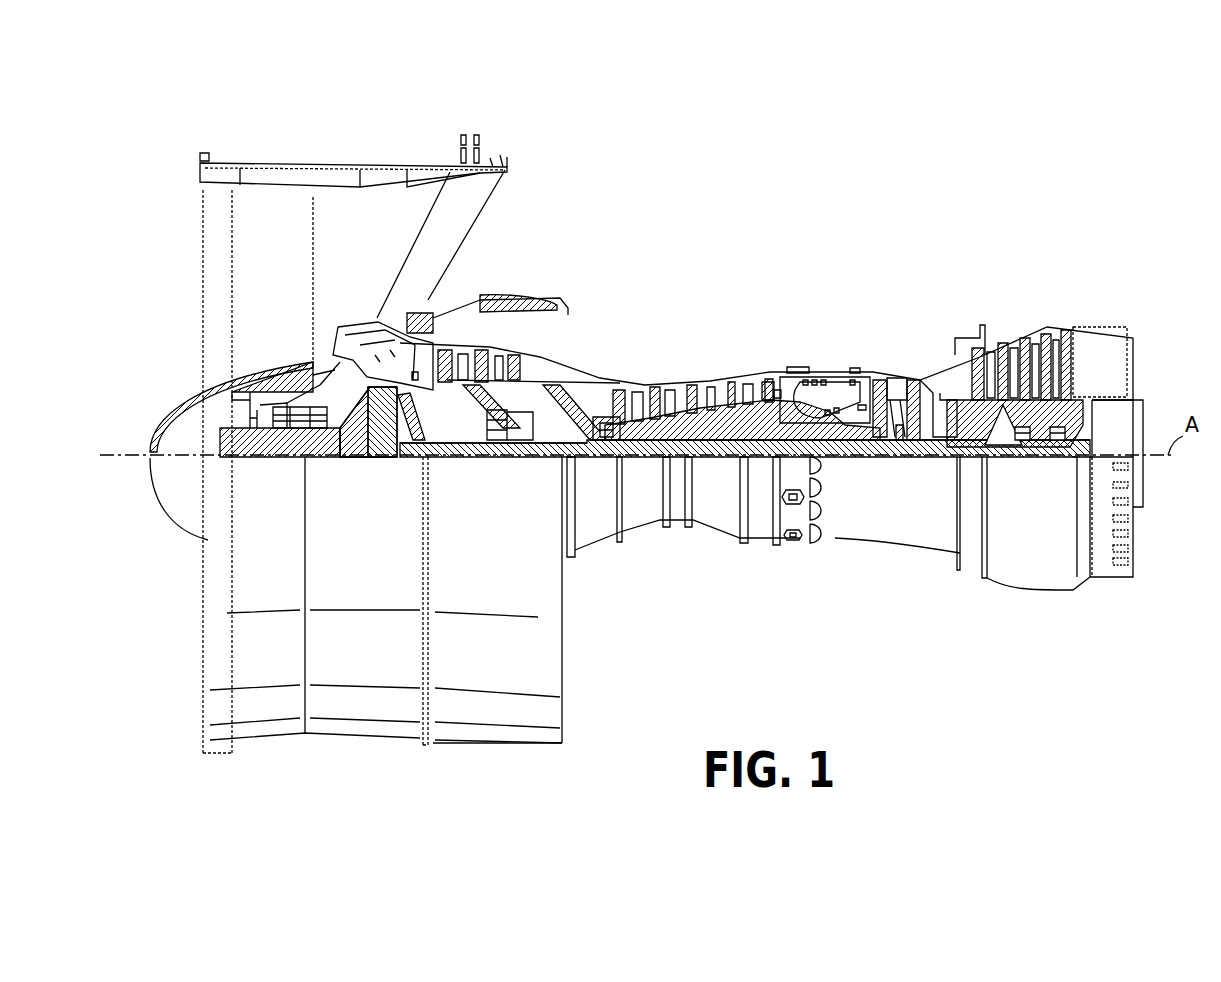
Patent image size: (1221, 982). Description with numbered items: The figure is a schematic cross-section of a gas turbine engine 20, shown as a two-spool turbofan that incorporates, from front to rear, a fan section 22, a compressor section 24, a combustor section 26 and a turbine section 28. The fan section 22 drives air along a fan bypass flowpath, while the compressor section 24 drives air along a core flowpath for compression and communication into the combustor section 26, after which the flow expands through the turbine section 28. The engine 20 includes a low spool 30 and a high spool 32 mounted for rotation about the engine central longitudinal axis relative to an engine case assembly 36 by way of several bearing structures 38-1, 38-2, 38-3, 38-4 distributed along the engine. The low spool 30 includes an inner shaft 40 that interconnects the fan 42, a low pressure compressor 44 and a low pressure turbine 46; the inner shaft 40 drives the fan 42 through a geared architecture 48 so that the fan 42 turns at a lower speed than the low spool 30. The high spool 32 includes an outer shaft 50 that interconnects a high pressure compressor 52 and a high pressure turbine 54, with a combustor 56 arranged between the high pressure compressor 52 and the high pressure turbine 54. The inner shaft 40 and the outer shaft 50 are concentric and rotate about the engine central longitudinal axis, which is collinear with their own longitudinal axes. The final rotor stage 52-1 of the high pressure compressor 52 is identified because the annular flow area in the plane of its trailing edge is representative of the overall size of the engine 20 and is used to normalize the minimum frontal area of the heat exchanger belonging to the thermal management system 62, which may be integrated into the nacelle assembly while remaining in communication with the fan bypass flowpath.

The gas turbine engine 20 is at (905, 212).
The fan section 22 is at (418, 120).
The compressor section 24 is at (433, 265).
The combustor section 26 is at (878, 265).
The turbine section 28 is at (1082, 265).
The low spool 30 is at (717, 458).
The high spool 32 is at (753, 423).
The engine case assembly 36 is at (762, 535).
The bearing structure 38-1 is at (455, 508).
The bearing structure 38-2 is at (666, 568).
The bearing structure 38-3 is at (957, 326).
The bearing structure 38-4 is at (1090, 509).
The inner shaft 40 is at (591, 452).
The fan 42 is at (283, 301).
The low pressure compressor 44 is at (497, 352).
The low pressure turbine 46 is at (1020, 347).
The geared architecture 48 is at (392, 437).
The outer shaft 50 is at (830, 433).
The high pressure compressor 52 is at (697, 427).
The final rotor stage 52-1 is at (773, 390).
The high pressure turbine 54 is at (893, 373).
The combustor 56 is at (827, 397).
The thermal management system 62 is at (628, 437).